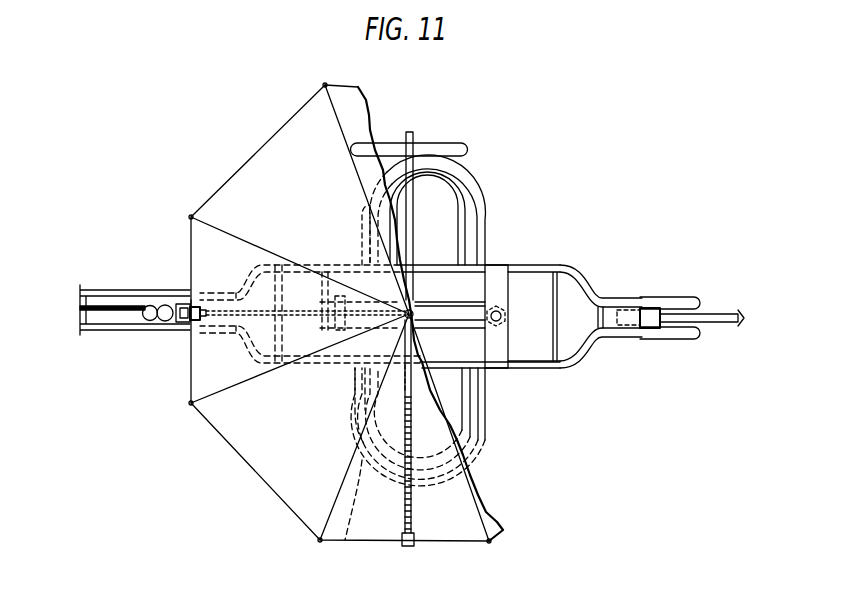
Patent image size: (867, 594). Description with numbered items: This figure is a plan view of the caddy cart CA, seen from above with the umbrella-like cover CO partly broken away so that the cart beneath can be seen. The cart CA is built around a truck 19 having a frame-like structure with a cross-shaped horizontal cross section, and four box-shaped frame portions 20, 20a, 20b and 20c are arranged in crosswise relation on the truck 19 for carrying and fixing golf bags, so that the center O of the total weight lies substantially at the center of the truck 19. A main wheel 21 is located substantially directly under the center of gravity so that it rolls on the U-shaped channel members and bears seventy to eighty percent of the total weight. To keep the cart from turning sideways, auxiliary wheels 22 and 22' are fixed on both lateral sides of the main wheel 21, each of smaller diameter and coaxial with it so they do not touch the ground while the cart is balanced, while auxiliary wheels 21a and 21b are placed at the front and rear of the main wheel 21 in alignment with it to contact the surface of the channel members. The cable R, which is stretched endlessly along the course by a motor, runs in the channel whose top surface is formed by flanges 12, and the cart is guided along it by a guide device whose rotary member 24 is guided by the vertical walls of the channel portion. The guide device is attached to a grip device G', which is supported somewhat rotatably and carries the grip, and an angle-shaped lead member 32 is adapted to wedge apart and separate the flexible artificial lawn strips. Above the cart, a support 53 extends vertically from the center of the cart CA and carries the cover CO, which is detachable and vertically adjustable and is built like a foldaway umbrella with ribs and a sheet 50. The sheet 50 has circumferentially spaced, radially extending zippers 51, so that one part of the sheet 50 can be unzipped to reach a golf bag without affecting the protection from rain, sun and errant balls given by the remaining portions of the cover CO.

The umbrella-like cover CO is at (246, 460).
The sheet 50 is at (290, 492).
The auxiliary wheel 22 is at (418, 205).
The box-shaped frame portion 20b is at (447, 205).
The truck 19 is at (347, 262).
The box-shaped frame portion 20 is at (292, 368).
The auxiliary wheel 21a is at (222, 292).
The support 53 is at (356, 368).
The box-shaped frame portion 20a is at (530, 345).
The main wheel 21 is at (463, 300).
The center of total weight O is at (432, 300).
The caddy cart CA is at (590, 272).
The auxiliary wheel 21b is at (650, 298).
The flange 12 is at (682, 297).
The cable R is at (732, 314).
The angle-shaped lead member 32 is at (145, 313).
The rotary member 24 is at (146, 306).
The grip device G' is at (160, 281).
The zipper 51 is at (216, 316).
The box-shaped frame portion 20c is at (480, 442).
The auxiliary wheel 22' is at (338, 467).